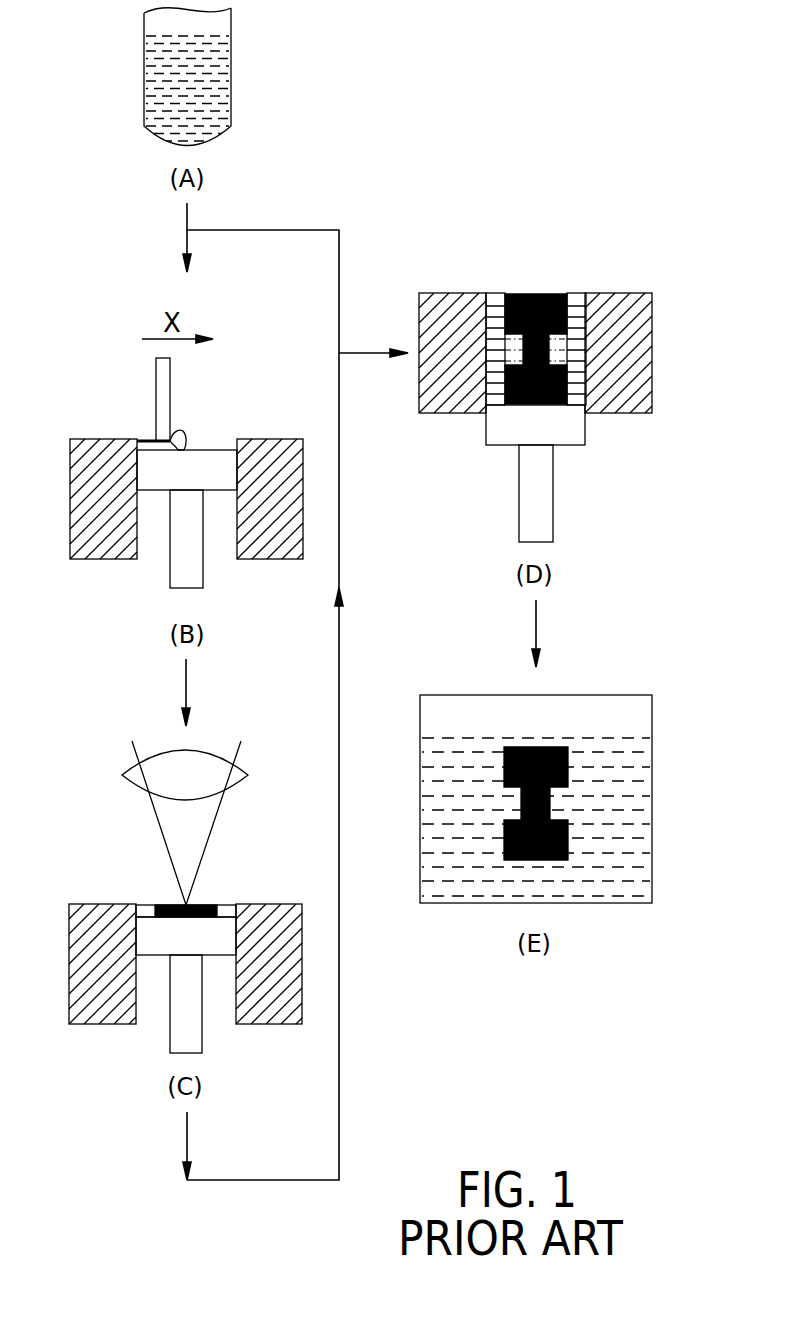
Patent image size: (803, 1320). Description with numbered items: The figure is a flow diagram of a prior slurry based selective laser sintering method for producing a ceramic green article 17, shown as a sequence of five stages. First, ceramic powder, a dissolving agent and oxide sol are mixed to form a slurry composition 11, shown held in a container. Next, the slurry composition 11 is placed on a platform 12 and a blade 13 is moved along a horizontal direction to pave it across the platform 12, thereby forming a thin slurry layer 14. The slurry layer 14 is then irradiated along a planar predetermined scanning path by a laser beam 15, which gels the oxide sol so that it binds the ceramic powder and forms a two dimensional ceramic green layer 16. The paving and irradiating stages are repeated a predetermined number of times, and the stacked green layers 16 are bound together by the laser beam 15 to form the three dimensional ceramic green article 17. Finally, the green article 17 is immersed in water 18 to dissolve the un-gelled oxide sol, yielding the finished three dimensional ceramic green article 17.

The slurry composition 11 is at (160, 71).
The platform 12 is at (150, 473).
The blade 13 is at (160, 374).
The slurry layer 14 is at (150, 442).
The laser beam 15 is at (160, 837).
The ceramic green layer 16 is at (165, 903).
The ceramic green article 17 is at (537, 293).
The water 18 is at (618, 810).